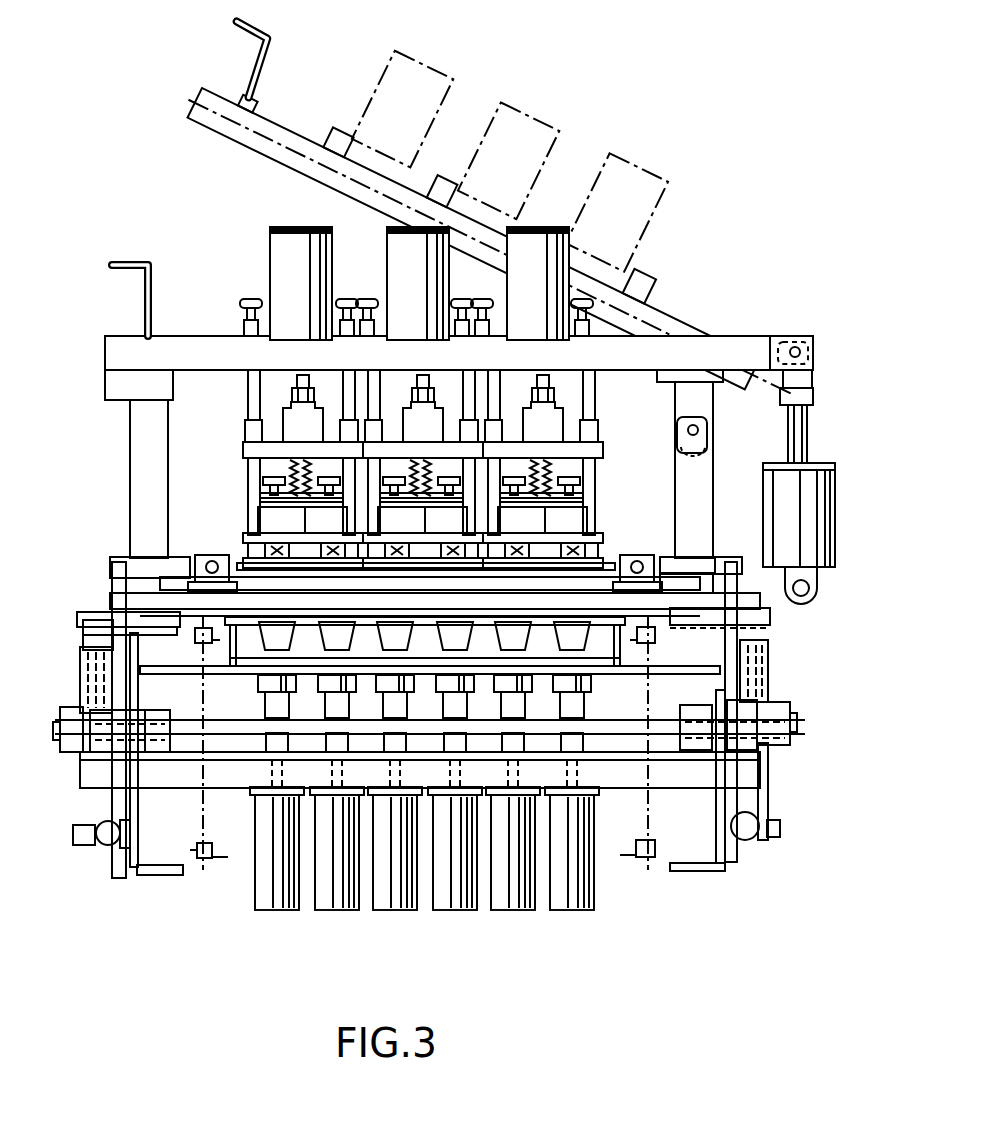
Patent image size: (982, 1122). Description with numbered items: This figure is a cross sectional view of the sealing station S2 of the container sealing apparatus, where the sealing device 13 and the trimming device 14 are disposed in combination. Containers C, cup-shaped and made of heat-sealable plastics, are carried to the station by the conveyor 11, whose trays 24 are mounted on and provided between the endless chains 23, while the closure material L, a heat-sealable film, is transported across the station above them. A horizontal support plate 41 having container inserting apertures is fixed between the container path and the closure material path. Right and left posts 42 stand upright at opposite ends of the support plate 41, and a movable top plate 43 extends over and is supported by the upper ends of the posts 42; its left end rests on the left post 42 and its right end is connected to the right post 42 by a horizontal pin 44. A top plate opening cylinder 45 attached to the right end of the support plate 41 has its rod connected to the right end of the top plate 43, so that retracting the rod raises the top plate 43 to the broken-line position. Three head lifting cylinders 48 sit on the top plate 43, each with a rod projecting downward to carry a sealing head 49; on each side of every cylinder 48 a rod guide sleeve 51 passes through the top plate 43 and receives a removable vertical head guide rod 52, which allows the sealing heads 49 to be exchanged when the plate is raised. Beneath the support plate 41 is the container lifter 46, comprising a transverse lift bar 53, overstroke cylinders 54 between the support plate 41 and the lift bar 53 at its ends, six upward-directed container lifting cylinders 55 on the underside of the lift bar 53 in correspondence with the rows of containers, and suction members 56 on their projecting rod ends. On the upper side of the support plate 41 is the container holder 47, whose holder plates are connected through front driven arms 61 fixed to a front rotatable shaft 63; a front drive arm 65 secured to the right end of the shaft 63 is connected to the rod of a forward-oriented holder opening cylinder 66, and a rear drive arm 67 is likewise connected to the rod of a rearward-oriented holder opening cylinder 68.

The conveyor 11 is at (203, 874).
The sealing device 13 is at (210, 463).
The trimming device 14 is at (210, 510).
The endless chain 23 is at (212, 862).
The tray 24 is at (240, 660).
The support plate 41 is at (662, 598).
The post 42 is at (142, 522).
The top plate 43 is at (222, 134).
The horizontal pin 44 is at (688, 432).
The top plate opening cylinder 45 is at (832, 506).
The container lifter 46 is at (618, 888).
The container holder 47 is at (244, 592).
The head lifting cylinder 48 is at (272, 258).
The sealing head 49 is at (244, 480).
The rod guide sleeve 51 is at (250, 304).
The head guide rod 52 is at (246, 386).
The lift bar 53 is at (672, 778).
The overstroke cylinder 54 is at (85, 676).
The container lifting cylinder 55 is at (570, 908).
The suction member 56 is at (580, 695).
The front driven arm 61 is at (112, 580).
The front rotatable shaft 63 is at (190, 750).
The front drive arm 65 is at (768, 797).
The holder opening cylinder 66 is at (750, 838).
The rear drive arm 67 is at (85, 812).
The holder opening cylinder 68 is at (102, 848).
The container C is at (275, 648).
The closure material L is at (598, 562).
The sealing station S2 is at (750, 280).